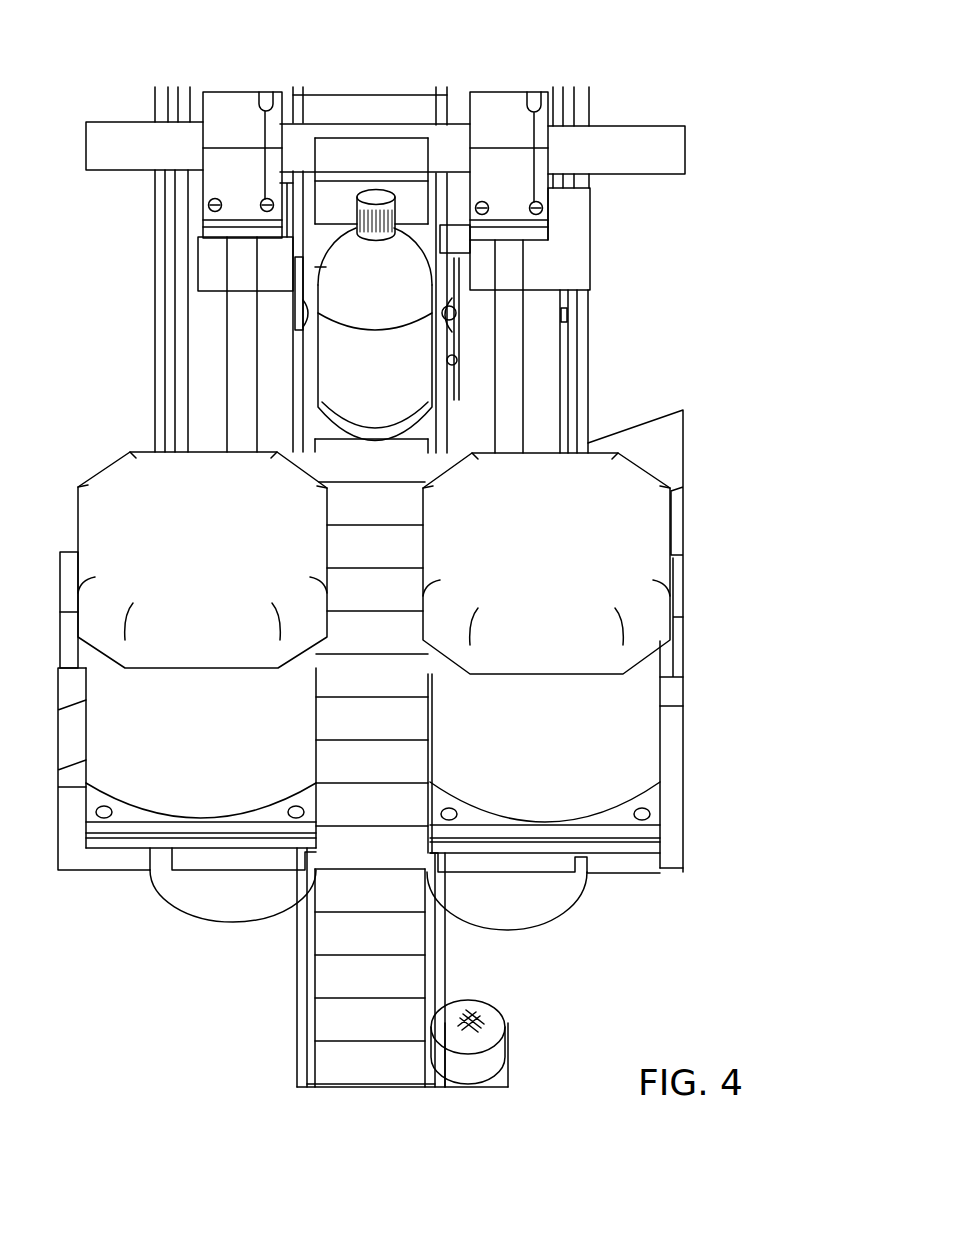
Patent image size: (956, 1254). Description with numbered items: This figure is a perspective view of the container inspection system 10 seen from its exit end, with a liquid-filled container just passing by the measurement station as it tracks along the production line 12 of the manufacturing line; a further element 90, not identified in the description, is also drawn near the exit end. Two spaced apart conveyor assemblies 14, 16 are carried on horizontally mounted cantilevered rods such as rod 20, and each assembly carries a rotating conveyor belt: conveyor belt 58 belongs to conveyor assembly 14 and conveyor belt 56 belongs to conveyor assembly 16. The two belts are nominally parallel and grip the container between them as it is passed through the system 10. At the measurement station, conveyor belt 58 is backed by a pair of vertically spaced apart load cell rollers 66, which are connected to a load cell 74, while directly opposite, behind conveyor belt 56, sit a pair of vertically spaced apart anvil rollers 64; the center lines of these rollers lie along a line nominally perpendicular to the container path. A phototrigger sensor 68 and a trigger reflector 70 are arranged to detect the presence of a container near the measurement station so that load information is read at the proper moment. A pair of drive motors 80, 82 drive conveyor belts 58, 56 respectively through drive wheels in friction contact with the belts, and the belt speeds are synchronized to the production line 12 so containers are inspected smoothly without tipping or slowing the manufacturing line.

The system 10 is at (598, 70).
The production line 12 is at (280, 1027).
The conveyor assembly 14 is at (495, 862).
The conveyor assembly 16 is at (235, 858).
The cantilevered rod 20 is at (333, 153).
The conveyor belt 56 is at (250, 910).
The conveyor belt 58 is at (493, 920).
The anvil rollers 64 is at (298, 328).
The load cell rollers 66 is at (452, 337).
The phototrigger sensor 68 is at (452, 238).
The trigger reflector 70 is at (290, 213).
The load cell 74 is at (567, 316).
The drive motor 80 is at (560, 738).
The drive motor 82 is at (198, 740).
The container 90 is at (483, 1010).